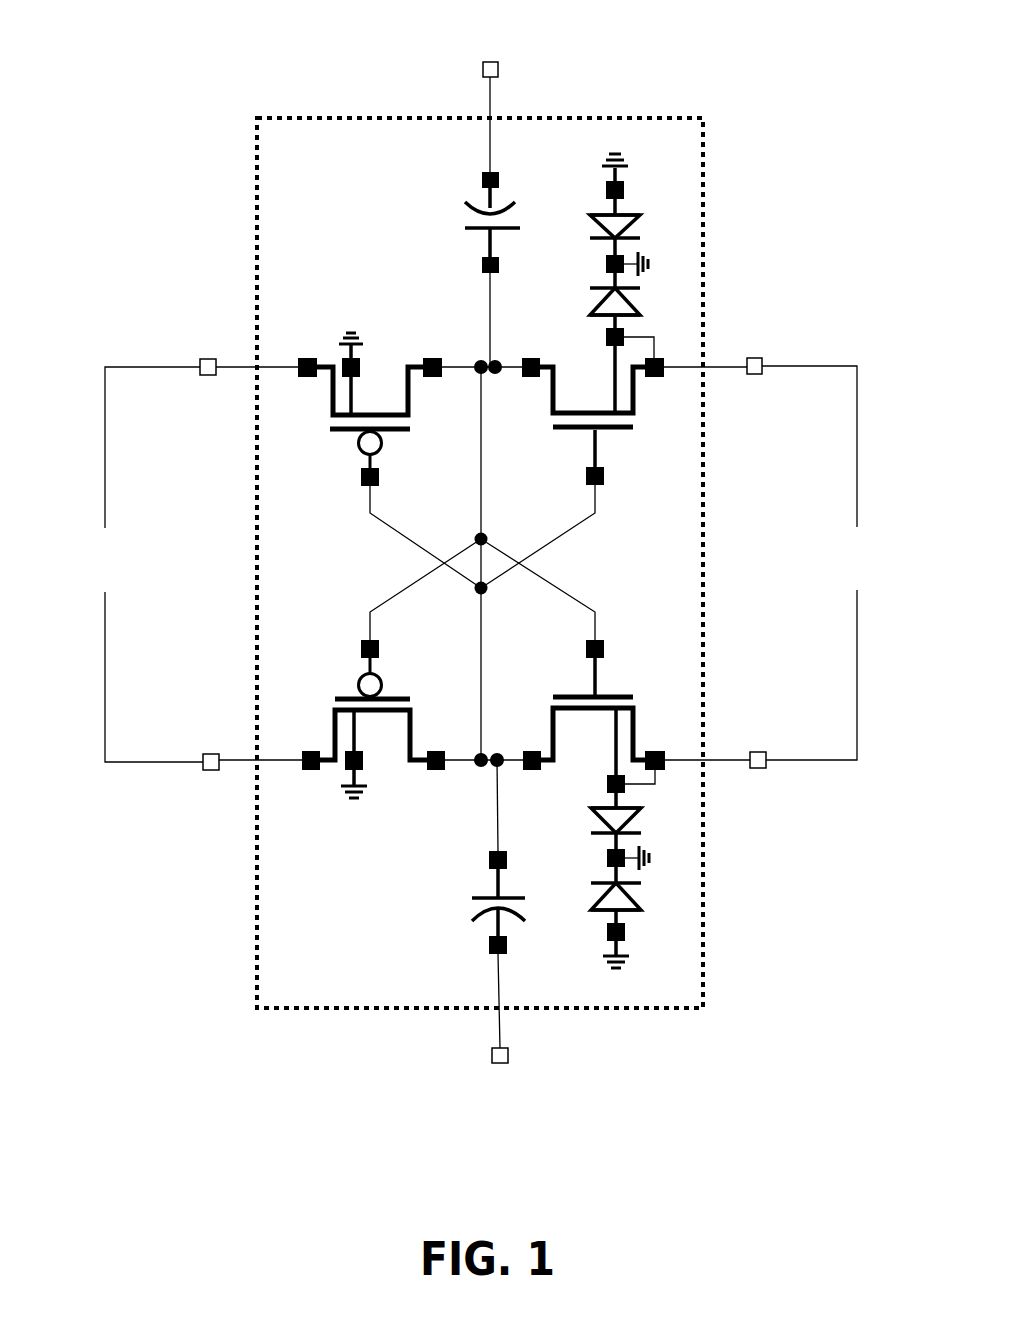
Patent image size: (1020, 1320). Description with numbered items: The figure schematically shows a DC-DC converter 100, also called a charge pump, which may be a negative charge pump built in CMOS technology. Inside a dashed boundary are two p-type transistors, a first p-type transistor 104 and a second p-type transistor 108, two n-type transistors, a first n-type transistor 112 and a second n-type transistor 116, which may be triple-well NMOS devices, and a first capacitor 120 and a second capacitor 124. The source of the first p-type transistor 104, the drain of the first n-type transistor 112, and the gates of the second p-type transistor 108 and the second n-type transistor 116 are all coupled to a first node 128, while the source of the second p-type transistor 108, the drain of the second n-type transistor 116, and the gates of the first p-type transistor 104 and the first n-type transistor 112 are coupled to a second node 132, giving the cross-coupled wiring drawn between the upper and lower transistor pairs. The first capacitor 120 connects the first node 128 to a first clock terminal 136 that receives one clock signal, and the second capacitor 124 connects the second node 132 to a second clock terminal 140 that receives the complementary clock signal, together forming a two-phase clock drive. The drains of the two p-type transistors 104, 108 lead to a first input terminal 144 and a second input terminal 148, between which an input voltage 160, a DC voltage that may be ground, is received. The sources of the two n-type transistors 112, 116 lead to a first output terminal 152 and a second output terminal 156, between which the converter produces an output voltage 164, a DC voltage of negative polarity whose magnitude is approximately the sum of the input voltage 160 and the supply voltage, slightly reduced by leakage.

The DC-DC converter 100 is at (170, 160).
The p-type transistor MP0 104 is at (288, 417).
The p-type transistor MP1 108 is at (280, 698).
The n-type transistor MN0 112 is at (664, 406).
The n-type transistor MN1 116 is at (670, 709).
The capacitor C0 120 is at (489, 212).
The capacitor C1 124 is at (492, 916).
The first node 128 is at (476, 539).
The second node 132 is at (486, 588).
The first clock terminal 136 is at (497, 63).
The second clock terminal 140 is at (493, 1062).
The first input terminal 144 is at (208, 358).
The second input terminal 148 is at (211, 771).
The first output terminal 152 is at (754, 357).
The second output terminal 156 is at (758, 770).
The input voltage 160 is at (144, 564).
The output voltage 164 is at (827, 563).